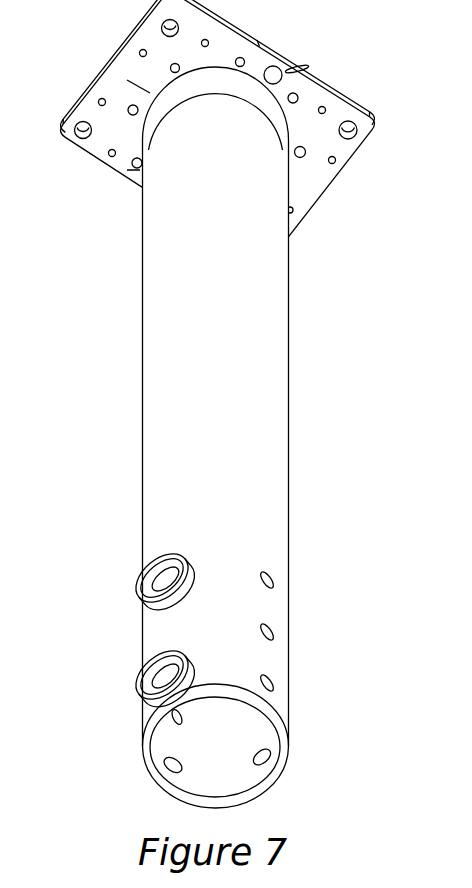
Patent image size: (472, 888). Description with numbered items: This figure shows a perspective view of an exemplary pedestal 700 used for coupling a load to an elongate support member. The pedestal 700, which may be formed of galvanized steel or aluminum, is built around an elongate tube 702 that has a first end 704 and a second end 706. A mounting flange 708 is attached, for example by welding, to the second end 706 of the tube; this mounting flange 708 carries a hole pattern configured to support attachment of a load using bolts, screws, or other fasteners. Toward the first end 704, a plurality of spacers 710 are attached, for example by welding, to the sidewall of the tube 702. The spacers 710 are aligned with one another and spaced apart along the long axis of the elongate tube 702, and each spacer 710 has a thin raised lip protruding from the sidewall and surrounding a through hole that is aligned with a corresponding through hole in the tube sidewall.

The pedestal 700 is at (317, 332).
The elongate tube 702 is at (153, 378).
The first end 704 is at (277, 710).
The second end 706 is at (273, 103).
The mounting flange 708 is at (93, 78).
The spacers 710 is at (137, 595).